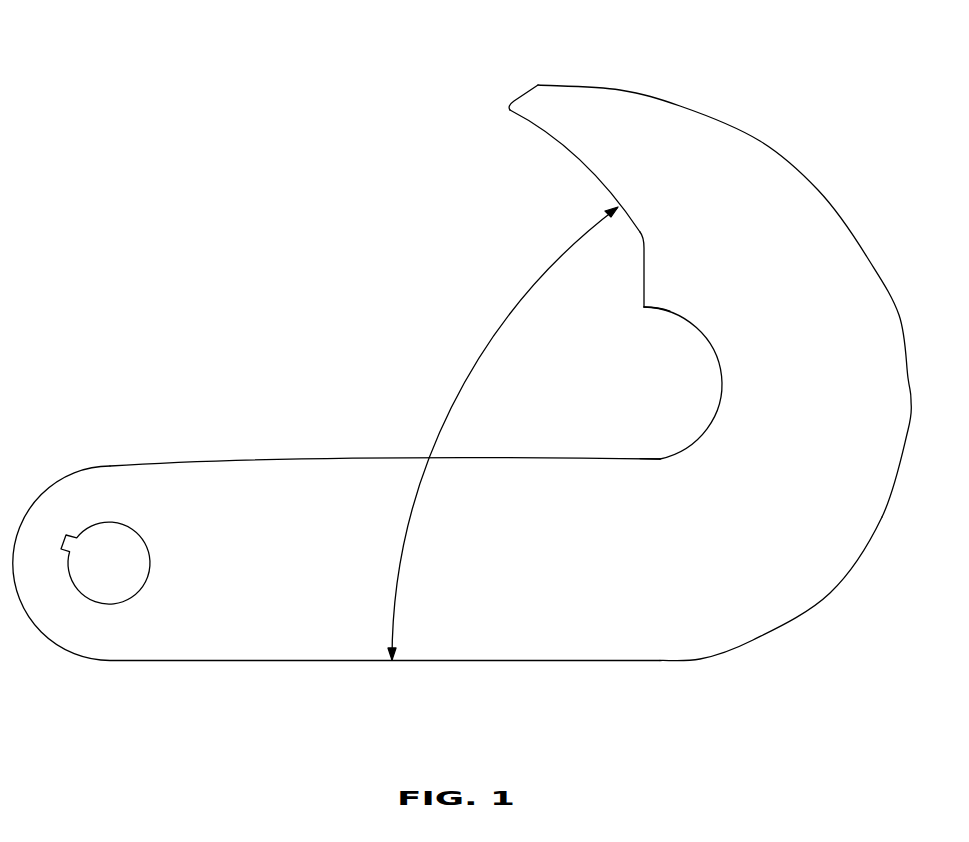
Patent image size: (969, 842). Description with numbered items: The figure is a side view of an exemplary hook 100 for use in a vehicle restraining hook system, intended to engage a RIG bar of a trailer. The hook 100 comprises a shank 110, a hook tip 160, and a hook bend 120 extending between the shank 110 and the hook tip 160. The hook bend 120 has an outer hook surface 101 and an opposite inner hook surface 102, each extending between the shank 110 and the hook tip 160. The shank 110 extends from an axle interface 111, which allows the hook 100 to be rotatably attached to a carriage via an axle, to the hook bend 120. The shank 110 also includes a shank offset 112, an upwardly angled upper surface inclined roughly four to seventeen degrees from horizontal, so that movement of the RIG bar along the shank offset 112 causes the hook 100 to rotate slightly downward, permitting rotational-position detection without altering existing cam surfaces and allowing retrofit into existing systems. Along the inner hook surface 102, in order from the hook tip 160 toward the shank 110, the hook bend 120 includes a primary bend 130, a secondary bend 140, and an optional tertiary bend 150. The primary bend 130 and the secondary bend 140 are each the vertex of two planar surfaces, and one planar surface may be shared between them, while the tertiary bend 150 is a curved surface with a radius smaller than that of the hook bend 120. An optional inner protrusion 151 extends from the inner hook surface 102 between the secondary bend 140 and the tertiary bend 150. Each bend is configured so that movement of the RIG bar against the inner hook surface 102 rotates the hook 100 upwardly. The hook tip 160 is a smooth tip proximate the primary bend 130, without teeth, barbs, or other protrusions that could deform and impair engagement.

The hook 100 is at (212, 158).
The outer hook surface 101 is at (780, 157).
The inner hook surface 102 is at (661, 460).
The shank 110 is at (195, 635).
The axle interface 111 is at (113, 538).
The shank offset 112 is at (350, 460).
The hook bend 120 is at (870, 498).
The primary bend 130 is at (578, 158).
The secondary bend 140 is at (644, 236).
The tertiary bend 150 is at (725, 386).
The inner protrusion 151 is at (660, 300).
The hook tip 160 is at (510, 100).